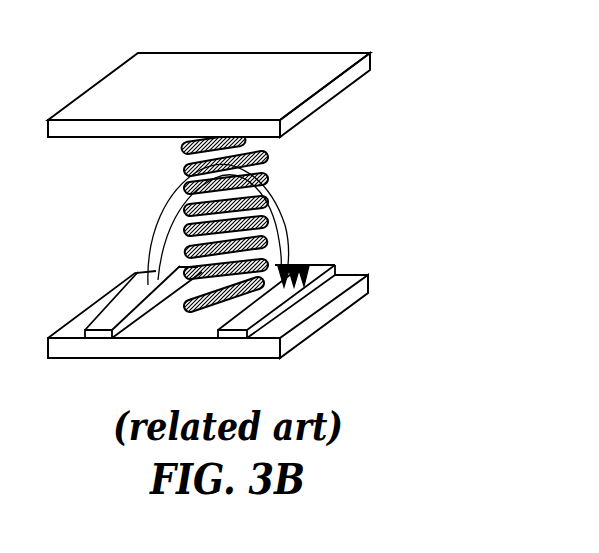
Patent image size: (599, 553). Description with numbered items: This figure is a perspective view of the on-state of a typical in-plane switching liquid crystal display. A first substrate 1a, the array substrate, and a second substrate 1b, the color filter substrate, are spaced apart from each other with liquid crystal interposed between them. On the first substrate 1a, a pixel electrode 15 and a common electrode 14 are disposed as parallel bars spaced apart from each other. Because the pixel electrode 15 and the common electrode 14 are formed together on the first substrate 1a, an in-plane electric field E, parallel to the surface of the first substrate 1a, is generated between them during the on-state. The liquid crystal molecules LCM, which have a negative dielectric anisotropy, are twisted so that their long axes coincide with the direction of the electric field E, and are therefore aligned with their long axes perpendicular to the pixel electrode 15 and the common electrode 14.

The first substrate 1a is at (370, 288).
The second substrate 1b is at (370, 63).
The common electrode 14 is at (323, 266).
The pixel electrode 15 is at (123, 302).
The liquid crystal molecules LCM is at (272, 157).
The electric field E is at (292, 262).